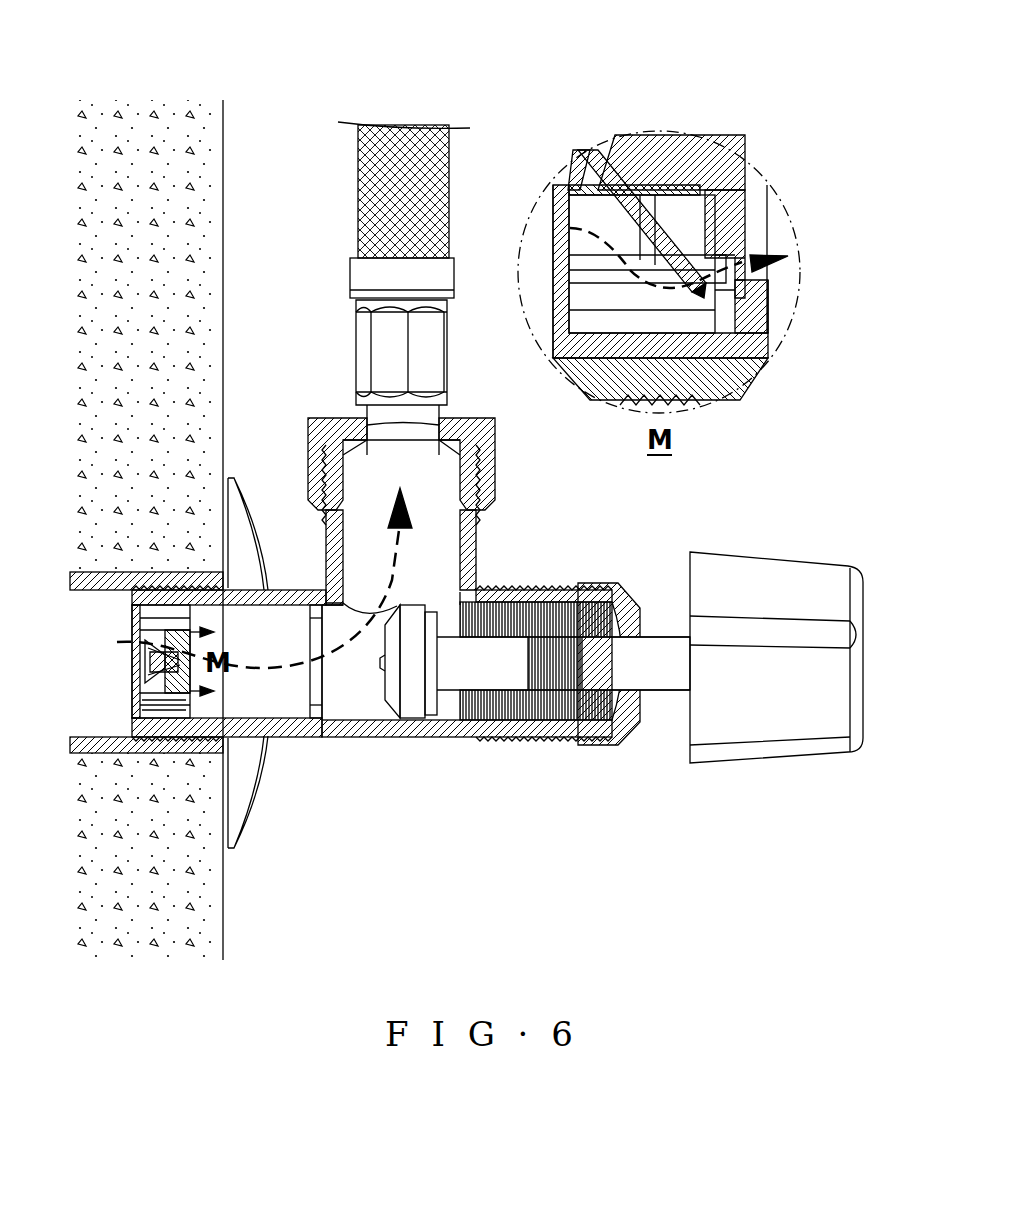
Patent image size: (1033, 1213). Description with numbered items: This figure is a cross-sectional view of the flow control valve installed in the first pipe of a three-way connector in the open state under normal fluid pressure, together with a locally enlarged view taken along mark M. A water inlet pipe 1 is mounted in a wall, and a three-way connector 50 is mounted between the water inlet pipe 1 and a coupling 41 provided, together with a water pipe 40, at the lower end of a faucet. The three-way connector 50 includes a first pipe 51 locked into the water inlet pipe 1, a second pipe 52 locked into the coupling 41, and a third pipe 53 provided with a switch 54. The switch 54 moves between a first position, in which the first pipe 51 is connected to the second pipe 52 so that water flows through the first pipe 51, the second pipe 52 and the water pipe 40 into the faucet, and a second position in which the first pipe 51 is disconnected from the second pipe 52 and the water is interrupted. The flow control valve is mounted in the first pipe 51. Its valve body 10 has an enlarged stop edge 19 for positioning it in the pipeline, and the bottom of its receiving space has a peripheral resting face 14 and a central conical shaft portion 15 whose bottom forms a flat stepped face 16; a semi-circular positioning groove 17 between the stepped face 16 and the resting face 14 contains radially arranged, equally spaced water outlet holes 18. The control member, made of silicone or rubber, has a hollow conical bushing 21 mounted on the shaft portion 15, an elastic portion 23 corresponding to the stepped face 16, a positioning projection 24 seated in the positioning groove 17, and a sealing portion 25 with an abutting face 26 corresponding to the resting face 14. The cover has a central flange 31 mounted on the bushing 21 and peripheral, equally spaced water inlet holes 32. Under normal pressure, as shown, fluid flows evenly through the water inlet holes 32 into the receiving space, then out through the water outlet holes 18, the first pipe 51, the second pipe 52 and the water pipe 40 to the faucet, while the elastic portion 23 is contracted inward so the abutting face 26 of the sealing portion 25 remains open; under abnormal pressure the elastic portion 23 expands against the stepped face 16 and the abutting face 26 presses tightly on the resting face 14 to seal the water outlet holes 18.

The water inlet pipe 1 is at (80, 590).
The valve body 10 is at (185, 613).
The resting face 14 is at (733, 317).
The shaft portion 15 is at (676, 150).
The stepped face 16 is at (710, 215).
The positioning groove 17 is at (747, 273).
The water outlet holes 18 is at (790, 258).
The stop edge 19 is at (519, 293).
The bushing 21 is at (612, 200).
The elastic portion 23 is at (680, 200).
The positioning projection 24 is at (740, 215).
The sealing portion 25 is at (656, 251).
The abutting face 26 is at (745, 240).
The flange 31 is at (572, 192).
The water inlet holes 32 is at (557, 240).
The water pipe 40 is at (370, 185).
The coupling 41 is at (322, 423).
The three-way connector 50 is at (372, 710).
The first pipe 51 is at (275, 707).
The second pipe 52 is at (442, 492).
The third pipe 53 is at (542, 717).
The switch 54 is at (415, 652).